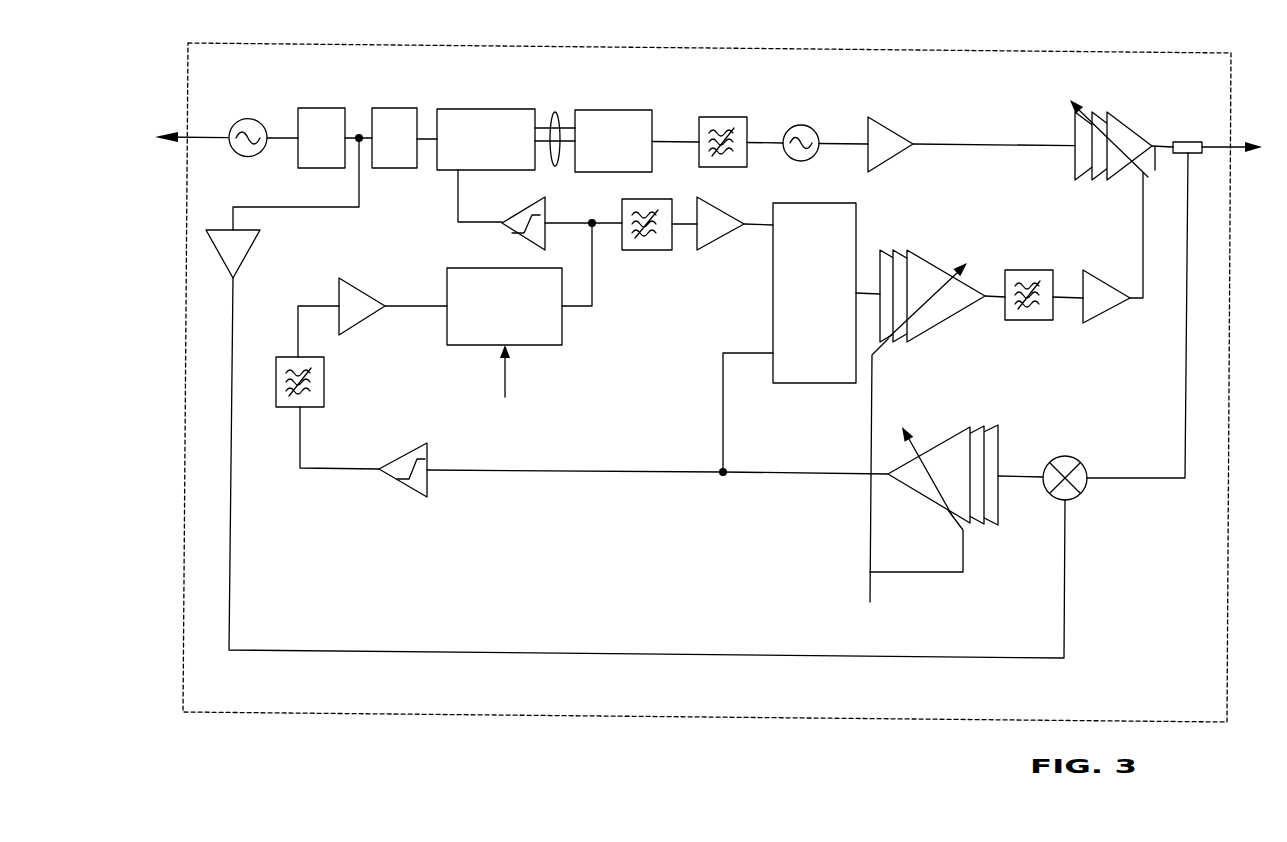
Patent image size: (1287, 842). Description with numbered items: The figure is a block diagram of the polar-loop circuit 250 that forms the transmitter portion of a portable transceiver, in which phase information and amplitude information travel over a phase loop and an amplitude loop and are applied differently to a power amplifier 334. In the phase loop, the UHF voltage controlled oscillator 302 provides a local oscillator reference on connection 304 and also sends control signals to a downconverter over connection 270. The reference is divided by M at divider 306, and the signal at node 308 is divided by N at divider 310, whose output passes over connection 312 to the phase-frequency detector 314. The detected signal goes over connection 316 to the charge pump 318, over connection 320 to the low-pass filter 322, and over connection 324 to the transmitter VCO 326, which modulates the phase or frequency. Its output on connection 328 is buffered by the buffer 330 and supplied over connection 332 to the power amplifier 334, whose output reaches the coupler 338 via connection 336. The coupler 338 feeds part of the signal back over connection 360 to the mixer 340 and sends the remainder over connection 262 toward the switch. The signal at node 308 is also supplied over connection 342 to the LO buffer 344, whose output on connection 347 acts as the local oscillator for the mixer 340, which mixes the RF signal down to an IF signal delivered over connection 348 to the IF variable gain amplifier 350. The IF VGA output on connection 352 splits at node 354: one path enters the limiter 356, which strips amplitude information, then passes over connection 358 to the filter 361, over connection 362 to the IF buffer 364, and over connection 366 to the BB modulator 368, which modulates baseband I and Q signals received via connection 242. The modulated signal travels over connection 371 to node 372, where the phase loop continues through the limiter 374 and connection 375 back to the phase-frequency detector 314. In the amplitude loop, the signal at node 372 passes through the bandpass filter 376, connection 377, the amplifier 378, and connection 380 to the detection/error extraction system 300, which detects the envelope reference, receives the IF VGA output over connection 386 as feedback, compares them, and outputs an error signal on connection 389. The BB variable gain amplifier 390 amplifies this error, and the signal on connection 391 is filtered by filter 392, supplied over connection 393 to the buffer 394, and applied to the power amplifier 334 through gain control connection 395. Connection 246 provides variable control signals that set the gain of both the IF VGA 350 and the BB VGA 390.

The polar-loop circuit 250 is at (403, 71).
The connection 270 is at (181, 132).
The UHF voltage controlled oscillator 302 is at (250, 118).
The connection 304 is at (278, 138).
The divider 306 is at (305, 108).
The node 308 is at (359, 165).
The divider 310 is at (383, 108).
The connection 312 is at (428, 139).
The phase-frequency detector 314 is at (443, 109).
The connection 316 is at (556, 112).
The charge pump 318 is at (617, 110).
The connection 320 is at (685, 141).
The low-pass filter 322 is at (740, 117).
The connection 324 is at (760, 141).
The transmitter VCO 326 is at (803, 125).
The connection 328 is at (853, 144).
The buffer 330 is at (880, 123).
The connection 332 is at (945, 144).
The power amplifier 334 is at (1097, 108).
The connection 336 is at (1165, 170).
The coupler 338 is at (1190, 153).
The connection 262 is at (1222, 146).
The connection 342 is at (323, 208).
The LO buffer 344 is at (258, 234).
The connection 347 is at (887, 658).
The connection 348 is at (1030, 477).
The mixer 340 is at (1067, 456).
The IF variable gain amplifier 350 is at (964, 428).
The connection 352 is at (768, 472).
The node 354 is at (722, 477).
The limiter 356 is at (430, 479).
The connection 358 is at (325, 470).
The connection 360 is at (1107, 480).
The filter 361 is at (324, 365).
The connection 362 is at (297, 333).
The IF buffer 364 is at (350, 330).
The connection 366 is at (412, 305).
The BB modulator 368 is at (470, 345).
The connection 371 is at (573, 307).
The node 372 is at (594, 227).
The limiter 374 is at (510, 229).
The connection 375 is at (458, 212).
The bandpass filter 376 is at (638, 250).
The connection 377 is at (683, 226).
The amplifier 378 is at (712, 205).
The connection 380 is at (757, 227).
The connection 386 is at (722, 423).
The connection 389 is at (874, 268).
The BB variable gain amplifier 390 is at (925, 253).
The connection 391 is at (998, 300).
The filter 392 is at (1028, 270).
The connection 393 is at (1070, 300).
The buffer 394 is at (1091, 272).
The gain control connection 395 is at (1133, 300).
The detection/error extraction system 300 is at (799, 328).
The connection 242 is at (505, 395).
The connection 246 is at (869, 590).